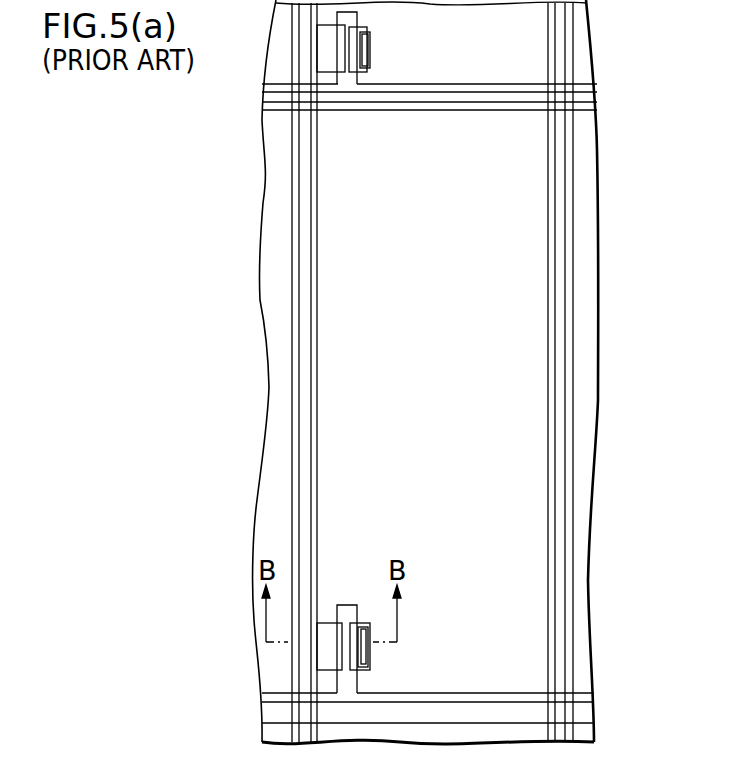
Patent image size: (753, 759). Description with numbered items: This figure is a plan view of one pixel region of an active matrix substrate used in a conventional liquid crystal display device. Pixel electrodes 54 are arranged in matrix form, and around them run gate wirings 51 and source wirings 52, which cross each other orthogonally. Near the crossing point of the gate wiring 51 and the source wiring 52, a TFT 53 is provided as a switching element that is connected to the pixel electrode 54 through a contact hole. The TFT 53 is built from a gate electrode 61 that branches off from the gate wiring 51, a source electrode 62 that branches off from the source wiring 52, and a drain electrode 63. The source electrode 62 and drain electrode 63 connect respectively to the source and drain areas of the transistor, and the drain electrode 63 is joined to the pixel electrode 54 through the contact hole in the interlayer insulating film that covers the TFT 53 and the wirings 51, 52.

The gate wiring 51 is at (270, 95).
The source wiring 52 is at (298, 26).
The TFT 53 is at (415, 591).
The pixel electrode 54 is at (507, 210).
The gate electrode 61 is at (348, 605).
The source electrode 62 is at (330, 622).
The drain electrode 63 is at (370, 663).